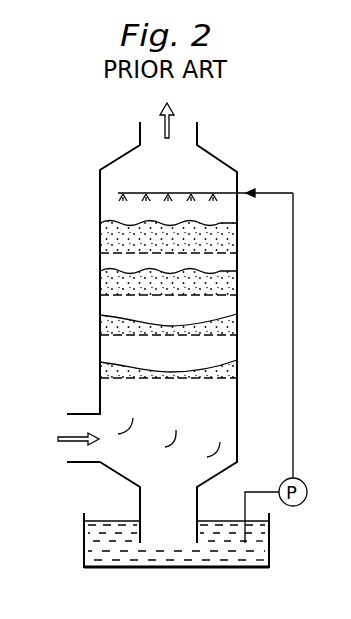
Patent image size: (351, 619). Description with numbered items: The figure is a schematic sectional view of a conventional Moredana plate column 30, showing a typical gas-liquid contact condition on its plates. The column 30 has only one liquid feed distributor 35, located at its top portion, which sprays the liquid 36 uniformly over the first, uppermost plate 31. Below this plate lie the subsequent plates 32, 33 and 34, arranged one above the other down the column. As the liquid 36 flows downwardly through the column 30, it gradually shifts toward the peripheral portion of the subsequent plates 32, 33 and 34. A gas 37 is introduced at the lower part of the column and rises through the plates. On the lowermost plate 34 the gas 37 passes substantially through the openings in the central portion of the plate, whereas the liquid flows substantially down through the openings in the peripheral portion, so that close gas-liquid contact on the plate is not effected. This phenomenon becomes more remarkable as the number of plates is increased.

The conventional Moredana plate column 30 is at (238, 401).
The first (uppermost) plate 31 is at (100, 253).
The second plate 32 is at (100, 296).
The third plate 33 is at (100, 336).
The lowermost plate 34 is at (100, 379).
The liquid feed distributor 35 is at (234, 192).
The liquid 36 is at (223, 552).
The gas 37 is at (60, 440).